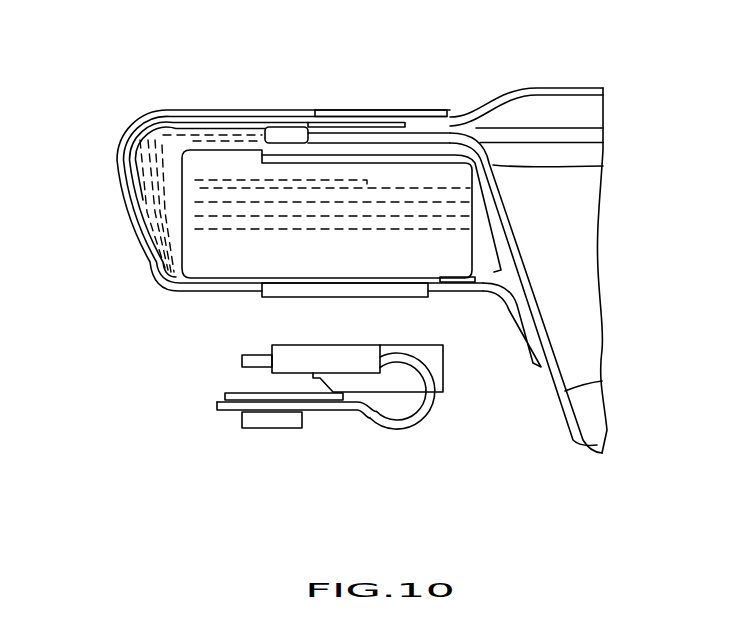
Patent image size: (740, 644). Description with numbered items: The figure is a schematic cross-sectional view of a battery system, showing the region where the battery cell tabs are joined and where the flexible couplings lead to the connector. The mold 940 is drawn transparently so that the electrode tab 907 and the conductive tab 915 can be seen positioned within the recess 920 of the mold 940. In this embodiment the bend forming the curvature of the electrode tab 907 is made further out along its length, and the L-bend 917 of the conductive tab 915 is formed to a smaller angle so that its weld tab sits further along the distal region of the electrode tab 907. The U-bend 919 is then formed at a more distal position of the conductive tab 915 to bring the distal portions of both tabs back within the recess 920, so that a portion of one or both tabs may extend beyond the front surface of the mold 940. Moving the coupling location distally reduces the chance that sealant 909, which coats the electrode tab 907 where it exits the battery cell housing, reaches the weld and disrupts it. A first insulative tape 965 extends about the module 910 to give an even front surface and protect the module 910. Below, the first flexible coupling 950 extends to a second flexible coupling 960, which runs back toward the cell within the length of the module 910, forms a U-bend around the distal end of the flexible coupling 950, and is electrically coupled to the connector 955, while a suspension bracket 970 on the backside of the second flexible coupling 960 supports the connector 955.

The electrode tab 907 is at (142, 157).
The sealant 909 is at (252, 125).
The module 910 is at (178, 282).
The conductive tab 915 is at (167, 228).
The L-bend 917 is at (172, 175).
The U-bend 919 is at (141, 151).
The recess 920 is at (160, 113).
The mold 940 is at (177, 130).
The flexible coupling 950 is at (272, 351).
The connector 955 is at (272, 428).
The second flexible coupling 960 is at (242, 361).
The first insulative tape 965 is at (315, 113).
The suspension bracket 970 is at (225, 397).